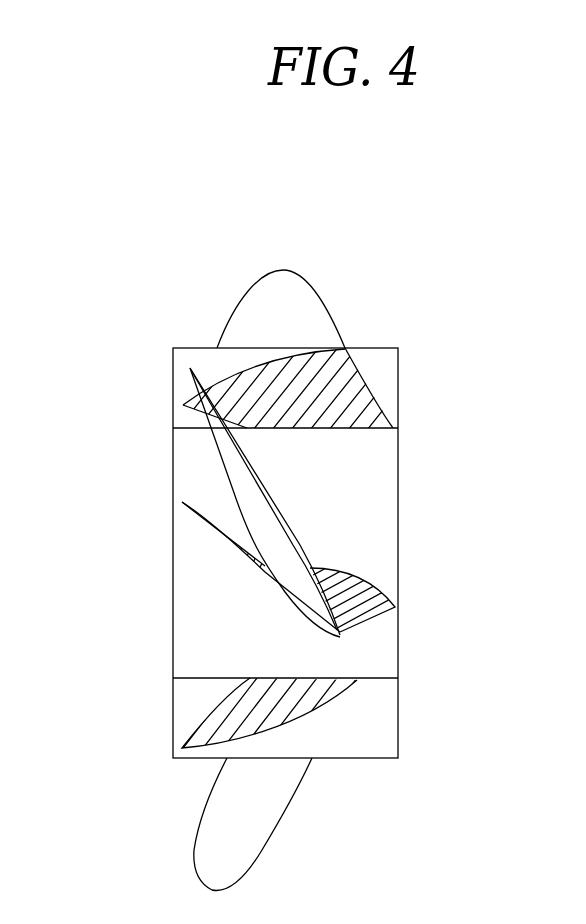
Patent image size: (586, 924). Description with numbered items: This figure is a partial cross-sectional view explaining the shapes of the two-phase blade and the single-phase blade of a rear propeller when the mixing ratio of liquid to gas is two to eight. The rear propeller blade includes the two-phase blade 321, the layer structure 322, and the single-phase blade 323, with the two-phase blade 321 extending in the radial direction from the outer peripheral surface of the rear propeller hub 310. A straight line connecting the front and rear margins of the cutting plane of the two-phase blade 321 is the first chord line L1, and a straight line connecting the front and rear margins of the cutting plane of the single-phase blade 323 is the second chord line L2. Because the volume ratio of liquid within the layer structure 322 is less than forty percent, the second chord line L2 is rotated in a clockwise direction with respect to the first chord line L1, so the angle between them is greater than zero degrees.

The rear propeller hub 310 is at (203, 652).
The two-phase blade 321 is at (373, 612).
The layer structure 322 is at (377, 357).
The single-phase blade 323 is at (247, 500).
The first chord line L1 is at (263, 569).
The second chord line L2 is at (267, 502).